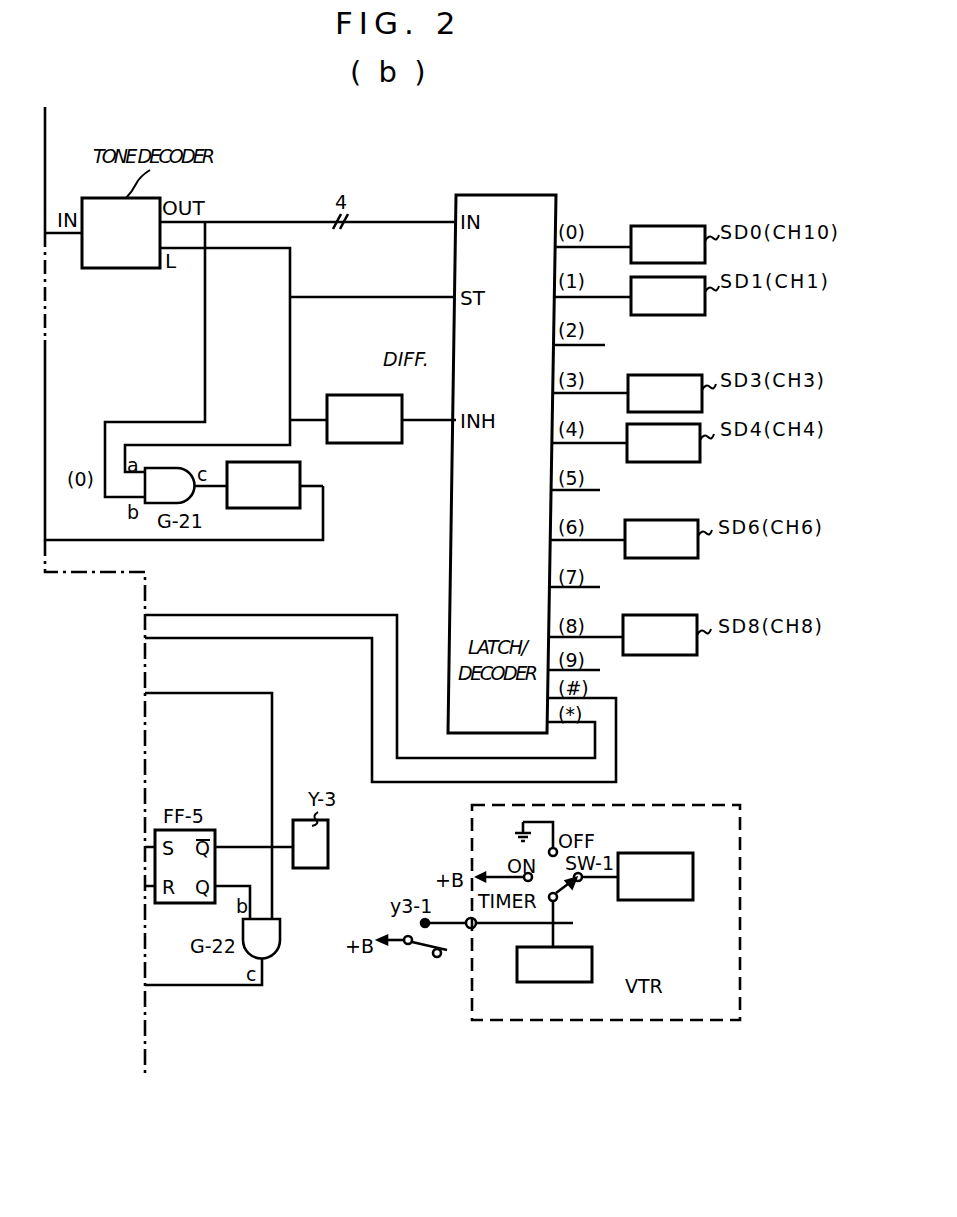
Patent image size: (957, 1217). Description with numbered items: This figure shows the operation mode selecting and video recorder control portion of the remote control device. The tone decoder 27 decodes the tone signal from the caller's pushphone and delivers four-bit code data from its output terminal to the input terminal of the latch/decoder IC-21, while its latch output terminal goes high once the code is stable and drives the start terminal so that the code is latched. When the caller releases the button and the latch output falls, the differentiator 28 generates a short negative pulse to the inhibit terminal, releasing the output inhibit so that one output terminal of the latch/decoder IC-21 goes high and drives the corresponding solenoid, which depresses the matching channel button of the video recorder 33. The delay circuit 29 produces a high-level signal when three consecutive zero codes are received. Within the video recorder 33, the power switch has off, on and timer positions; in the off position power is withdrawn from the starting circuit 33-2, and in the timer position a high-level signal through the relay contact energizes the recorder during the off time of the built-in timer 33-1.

The tone decoder 27 is at (113, 268).
The differentiator 28 is at (357, 393).
The 3-second delay circuit 29 is at (300, 469).
The latch/decoder 21 is at (451, 505).
The VTR 33 is at (472, 999).
The built-in timer 33-1 is at (538, 983).
The starting circuit 33-2 is at (652, 901).